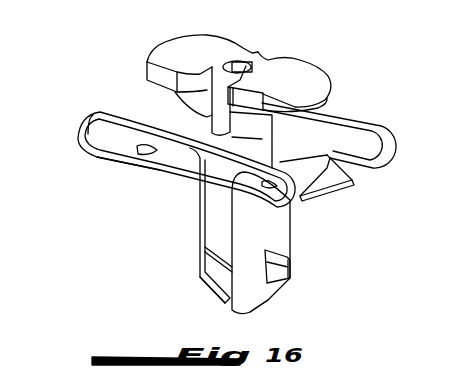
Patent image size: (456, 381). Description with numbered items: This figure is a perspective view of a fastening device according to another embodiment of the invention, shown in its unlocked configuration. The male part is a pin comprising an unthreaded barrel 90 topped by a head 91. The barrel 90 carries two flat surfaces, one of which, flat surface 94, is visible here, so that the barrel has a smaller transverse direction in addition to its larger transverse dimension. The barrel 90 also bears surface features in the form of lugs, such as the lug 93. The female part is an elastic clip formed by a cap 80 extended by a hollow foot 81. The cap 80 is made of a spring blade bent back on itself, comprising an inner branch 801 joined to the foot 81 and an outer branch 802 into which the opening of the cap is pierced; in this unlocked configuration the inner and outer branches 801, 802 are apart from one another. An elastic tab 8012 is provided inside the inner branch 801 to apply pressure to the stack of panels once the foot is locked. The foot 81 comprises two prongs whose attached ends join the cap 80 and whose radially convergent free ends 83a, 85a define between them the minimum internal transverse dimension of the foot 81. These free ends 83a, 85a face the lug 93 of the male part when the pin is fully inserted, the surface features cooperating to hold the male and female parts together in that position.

The cap 80 is at (72, 150).
The hollow foot 81 is at (184, 250).
The barrel 90 is at (325, 112).
The head 91 is at (173, 58).
The lug 93 is at (290, 256).
The flat surface 94 is at (213, 221).
The inner branch 801 is at (113, 158).
The outer branch 802 is at (112, 117).
The elastic tab 8012 is at (343, 188).
The free end of prong 83a is at (213, 295).
The free end of prong 85a is at (268, 297).